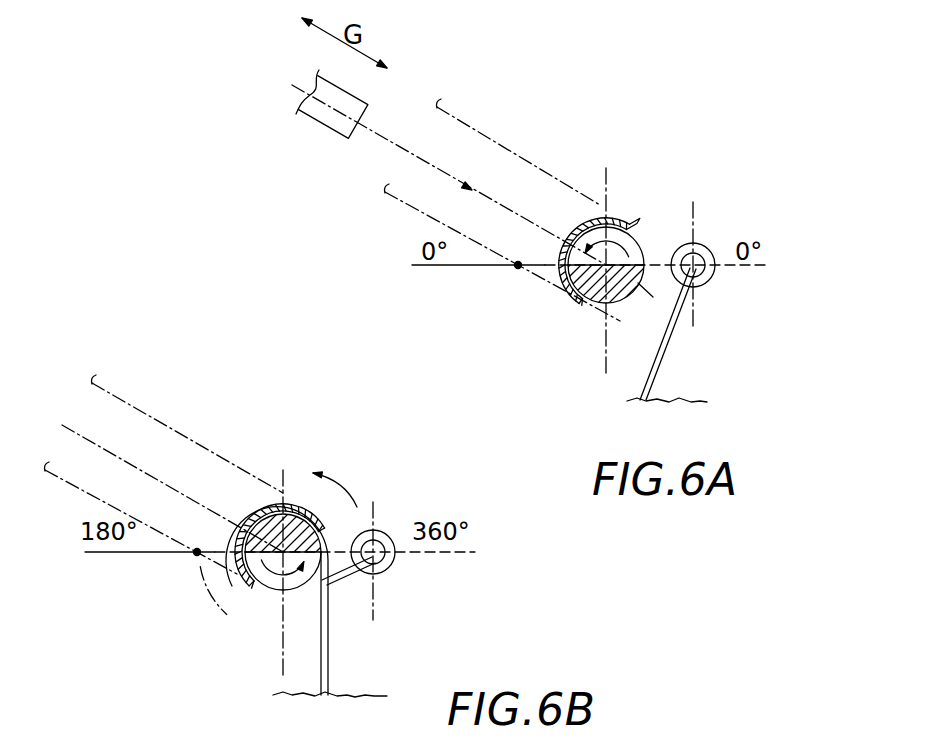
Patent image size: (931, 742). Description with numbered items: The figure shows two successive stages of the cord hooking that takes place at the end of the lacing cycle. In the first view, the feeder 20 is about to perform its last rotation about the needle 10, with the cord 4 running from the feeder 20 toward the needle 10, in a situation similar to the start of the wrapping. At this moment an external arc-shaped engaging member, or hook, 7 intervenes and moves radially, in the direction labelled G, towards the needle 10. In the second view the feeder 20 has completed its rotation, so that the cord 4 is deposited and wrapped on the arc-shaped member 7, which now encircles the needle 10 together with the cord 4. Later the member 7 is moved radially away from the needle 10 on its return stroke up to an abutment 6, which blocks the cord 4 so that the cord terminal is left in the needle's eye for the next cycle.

In FIG. 6A, the cord 4 is at (648, 357).
In FIG. 6B, the cord 4 is at (323, 669).
In FIG. 6A, the abutment 6 is at (327, 128).
In FIG. 6A, the arc-shaped engaging member 7 is at (578, 216).
In FIG. 6B, the arc-shaped engaging member 7 is at (240, 582).
In FIG. 6A, the needle 10 is at (650, 245).
In FIG. 6A, the feeder 20 is at (710, 290).
In FIG. 6B, the feeder 20 is at (395, 568).